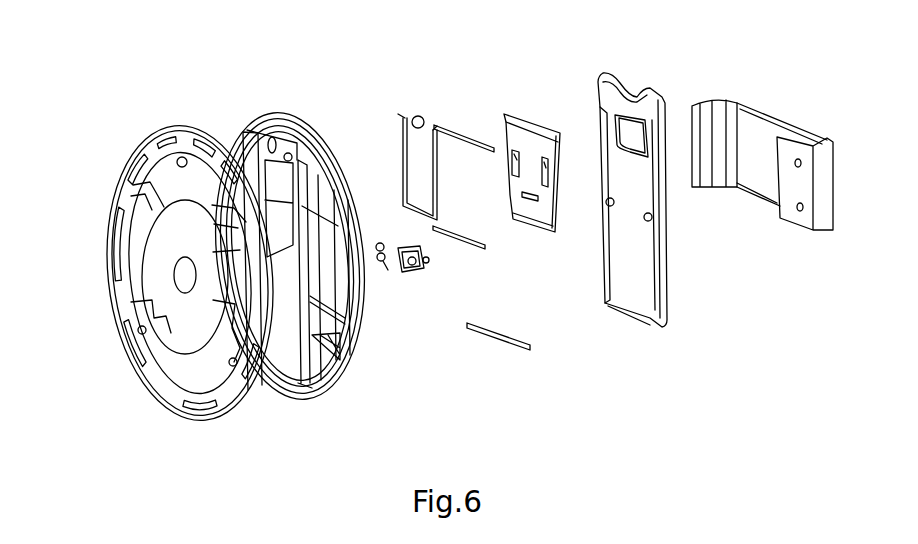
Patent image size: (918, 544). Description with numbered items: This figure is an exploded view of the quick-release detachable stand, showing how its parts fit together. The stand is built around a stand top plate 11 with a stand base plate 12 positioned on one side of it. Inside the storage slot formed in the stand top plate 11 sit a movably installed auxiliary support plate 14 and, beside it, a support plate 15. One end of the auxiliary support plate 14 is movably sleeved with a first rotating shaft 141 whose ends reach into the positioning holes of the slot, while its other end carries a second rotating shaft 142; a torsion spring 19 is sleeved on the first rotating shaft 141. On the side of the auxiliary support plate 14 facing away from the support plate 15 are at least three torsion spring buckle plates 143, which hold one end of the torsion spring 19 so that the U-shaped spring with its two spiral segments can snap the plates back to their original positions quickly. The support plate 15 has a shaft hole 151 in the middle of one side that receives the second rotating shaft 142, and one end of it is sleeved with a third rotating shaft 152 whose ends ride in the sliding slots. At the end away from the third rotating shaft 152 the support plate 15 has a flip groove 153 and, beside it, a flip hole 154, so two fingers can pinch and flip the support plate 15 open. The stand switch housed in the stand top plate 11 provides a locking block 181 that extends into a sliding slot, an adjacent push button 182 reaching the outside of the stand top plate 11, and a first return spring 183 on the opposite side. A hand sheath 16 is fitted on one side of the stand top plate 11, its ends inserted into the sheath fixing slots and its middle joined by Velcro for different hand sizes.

The stand top plate 11 is at (253, 120).
The stand base plate 12 is at (143, 203).
The auxiliary support plate 14 is at (550, 199).
The support plate 15 is at (632, 243).
The hand sheath 16 is at (743, 142).
The torsion spring 19 is at (405, 135).
The first rotating shaft 141 is at (457, 132).
The second rotating shaft 142 is at (438, 217).
The torsion spring buckle plates 143 is at (528, 188).
The shaft hole 151 is at (657, 217).
The third rotating shaft 152 is at (533, 348).
The flip groove 153 is at (635, 88).
The flip hole 154 is at (630, 147).
The locking block 181 is at (416, 271).
The push button 182 is at (432, 263).
The first return spring 183 is at (389, 271).